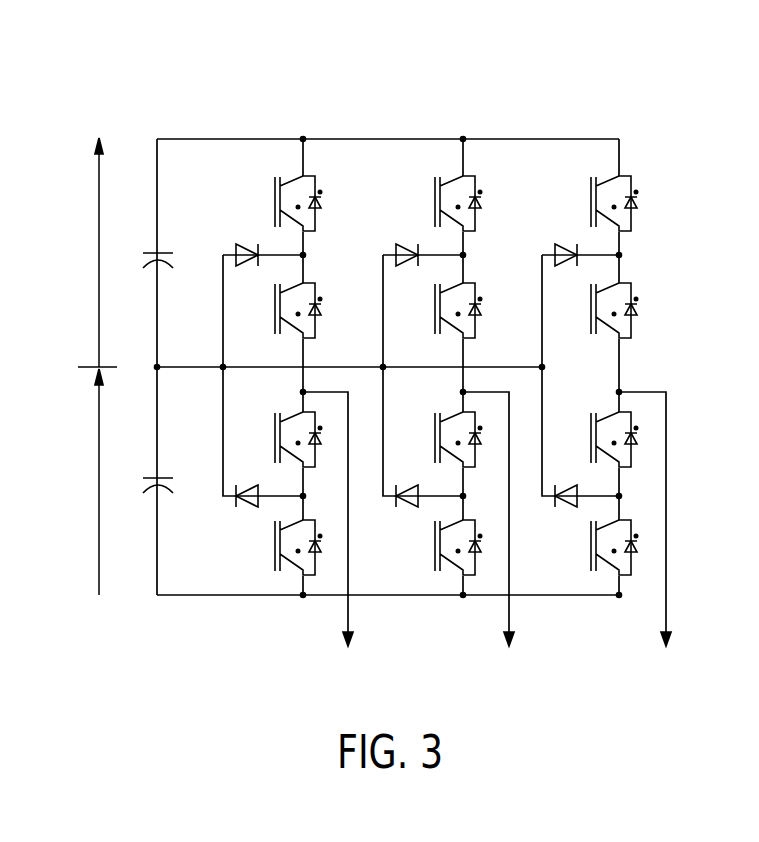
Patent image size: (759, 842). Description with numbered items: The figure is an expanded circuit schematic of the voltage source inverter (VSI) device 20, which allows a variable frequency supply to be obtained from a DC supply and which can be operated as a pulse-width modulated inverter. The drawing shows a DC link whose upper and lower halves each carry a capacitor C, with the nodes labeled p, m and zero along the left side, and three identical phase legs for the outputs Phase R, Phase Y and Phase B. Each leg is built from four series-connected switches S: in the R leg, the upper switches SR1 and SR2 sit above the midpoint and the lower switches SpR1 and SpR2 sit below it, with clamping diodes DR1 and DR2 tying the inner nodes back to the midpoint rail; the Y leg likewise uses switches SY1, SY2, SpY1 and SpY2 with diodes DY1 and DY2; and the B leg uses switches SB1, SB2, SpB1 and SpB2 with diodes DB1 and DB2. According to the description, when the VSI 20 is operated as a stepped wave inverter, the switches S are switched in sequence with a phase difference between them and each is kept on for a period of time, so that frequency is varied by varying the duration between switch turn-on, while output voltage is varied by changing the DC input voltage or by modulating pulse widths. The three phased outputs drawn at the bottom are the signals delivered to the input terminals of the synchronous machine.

The voltage source inverter 20 is at (699, 100).
The DC link capacitor C is at (159, 362).
The phase R upper outer switch SR1 is at (277, 203).
The phase R upper inner switch SR2 is at (277, 310).
The phase Y upper outer switch SY1 is at (438, 203).
The phase Y upper inner switch SY2 is at (438, 310).
The phase B upper outer switch SB1 is at (595, 203).
The phase B upper inner switch SB2 is at (595, 310).
The phase R lower inner switch S'R1 SpR1 is at (277, 439).
The phase R lower outer switch S'R2 SpR2 is at (277, 547).
The phase Y lower inner switch S'Y1 SpY1 is at (437, 439).
The phase Y lower outer switch S'Y2 SpY2 is at (437, 547).
The phase B lower inner switch S'B1 SpB1 is at (593, 439).
The phase B lower outer switch S'B2 SpB2 is at (593, 548).
The phase R upper clamping diode DR1 is at (234, 239).
The phase R lower clamping diode DR2 is at (234, 512).
The phase Y upper clamping diode DY1 is at (392, 240).
The phase Y lower clamping diode DY2 is at (391, 512).
The phase B upper clamping diode DB1 is at (552, 240).
The phase B lower clamping diode DB2 is at (551, 513).